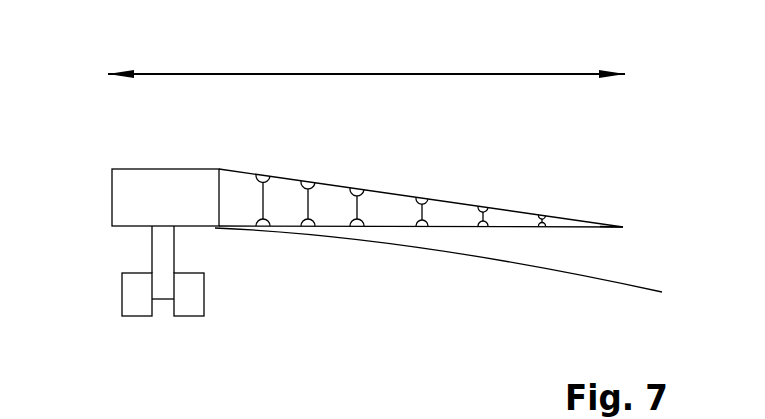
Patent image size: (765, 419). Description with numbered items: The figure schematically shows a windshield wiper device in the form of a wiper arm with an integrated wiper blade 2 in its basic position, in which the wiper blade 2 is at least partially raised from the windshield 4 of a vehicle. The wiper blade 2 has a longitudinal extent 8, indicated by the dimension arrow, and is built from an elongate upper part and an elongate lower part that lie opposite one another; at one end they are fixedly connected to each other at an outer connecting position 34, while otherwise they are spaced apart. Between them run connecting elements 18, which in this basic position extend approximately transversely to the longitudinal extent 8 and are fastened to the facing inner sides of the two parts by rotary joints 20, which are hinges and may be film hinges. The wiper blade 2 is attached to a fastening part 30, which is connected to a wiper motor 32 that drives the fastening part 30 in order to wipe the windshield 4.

The wiper blade 2 is at (590, 171).
The windshield 4 is at (604, 282).
The longitudinal extent 8 is at (365, 74).
The connecting elements 18 is at (270, 182).
The rotary joints 20 is at (263, 176).
The fastening part 30 is at (122, 196).
The wiper motor 32 is at (132, 295).
The outer connecting position 34 is at (625, 227).